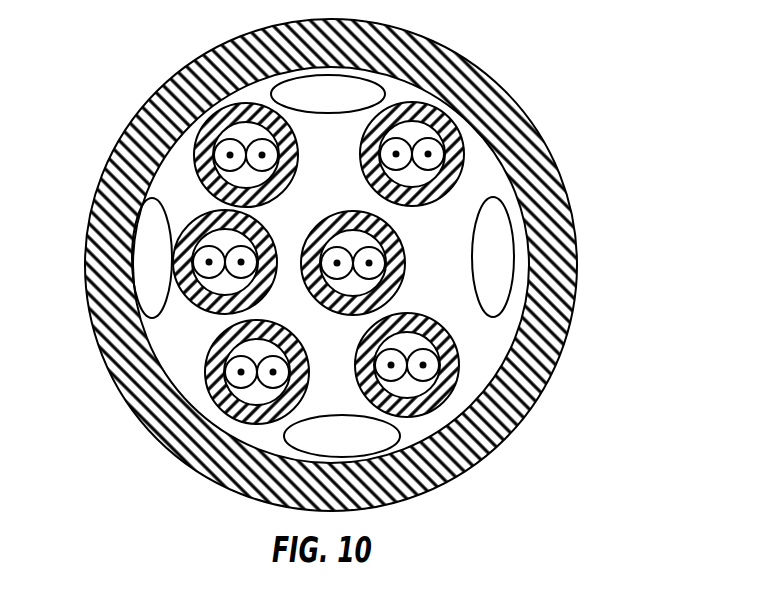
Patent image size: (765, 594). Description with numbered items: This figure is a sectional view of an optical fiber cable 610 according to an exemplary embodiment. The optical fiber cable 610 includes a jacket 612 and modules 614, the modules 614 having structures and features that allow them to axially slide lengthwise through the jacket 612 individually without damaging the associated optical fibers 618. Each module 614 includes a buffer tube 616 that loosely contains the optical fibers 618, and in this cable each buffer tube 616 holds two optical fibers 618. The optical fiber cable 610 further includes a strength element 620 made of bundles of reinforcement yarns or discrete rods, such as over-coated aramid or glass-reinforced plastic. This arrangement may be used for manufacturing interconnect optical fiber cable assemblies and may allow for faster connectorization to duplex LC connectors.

The optical fiber cable 610 is at (121, 86).
The jacket 612 is at (503, 113).
The module 614 is at (367, 245).
The buffer tube 616 is at (422, 403).
The optical fiber 618 is at (392, 358).
The strength element 620 is at (300, 437).